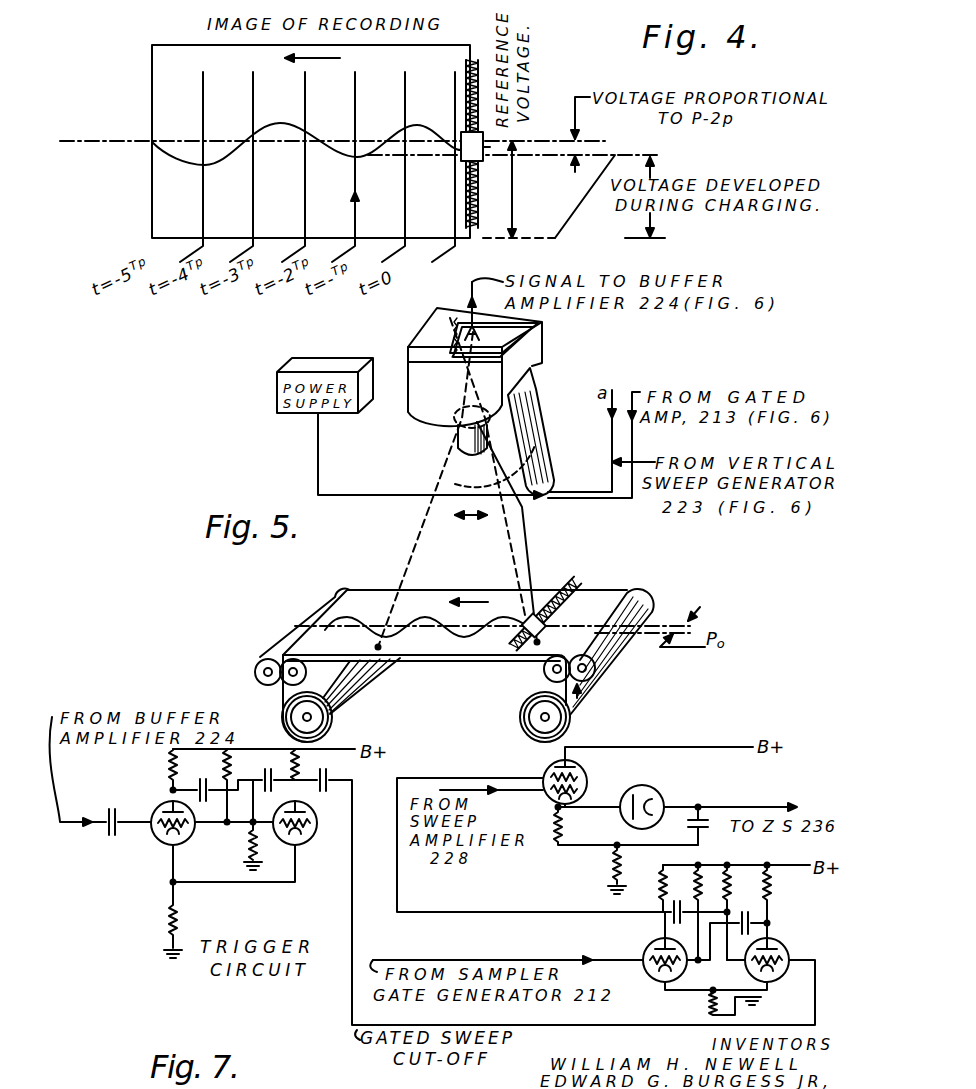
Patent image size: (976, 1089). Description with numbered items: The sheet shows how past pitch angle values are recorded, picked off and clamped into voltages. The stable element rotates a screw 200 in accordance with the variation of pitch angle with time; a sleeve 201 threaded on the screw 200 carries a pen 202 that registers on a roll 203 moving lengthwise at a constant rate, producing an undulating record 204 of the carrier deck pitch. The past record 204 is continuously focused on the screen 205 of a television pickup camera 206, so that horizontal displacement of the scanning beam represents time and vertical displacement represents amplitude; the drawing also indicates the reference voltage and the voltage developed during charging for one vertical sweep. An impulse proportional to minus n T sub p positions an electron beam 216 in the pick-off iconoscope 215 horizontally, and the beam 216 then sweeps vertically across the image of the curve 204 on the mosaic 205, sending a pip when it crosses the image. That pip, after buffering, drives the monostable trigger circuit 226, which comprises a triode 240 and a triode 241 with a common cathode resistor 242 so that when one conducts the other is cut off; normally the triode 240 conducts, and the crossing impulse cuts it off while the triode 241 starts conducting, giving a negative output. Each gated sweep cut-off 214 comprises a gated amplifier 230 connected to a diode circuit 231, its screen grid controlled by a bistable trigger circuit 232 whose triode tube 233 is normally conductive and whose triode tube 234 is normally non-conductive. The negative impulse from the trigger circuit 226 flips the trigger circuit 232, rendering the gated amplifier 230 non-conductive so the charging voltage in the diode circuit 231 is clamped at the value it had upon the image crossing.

In FIG. 4, the screw 200 is at (478, 64).
In FIG. 5, the screw 200 is at (576, 580).
In FIG. 4, the sleeve 201 is at (484, 158).
In FIG. 5, the sleeve 201 is at (537, 642).
In FIG. 4, the pen 202 is at (460, 148).
In FIG. 5, the pen 202 is at (550, 625).
In FIG. 4, the roll 203 is at (162, 211).
In FIG. 5, the roll 203 is at (605, 592).
In FIG. 4, the undulating record 204 is at (178, 158).
In FIG. 5, the undulating record 204 is at (478, 632).
In FIG. 5, the screen 205 is at (508, 335).
In FIG. 5, the television pickup camera 206 is at (530, 366).
In FIG. 5, the pick-off iconoscope 215 is at (553, 455).
In FIG. 5, the electron beam 216 is at (453, 482).
In FIG. 7, the trigger circuit 226 is at (150, 858).
In FIG. 7, the triode 240 is at (190, 843).
In FIG. 7, the triode 241 is at (302, 843).
In FIG. 7, the common cathode resistor 242 is at (165, 927).
In FIG. 7, the gated amplifier 230 is at (588, 770).
In FIG. 7, the diode circuit 231 is at (661, 797).
In FIG. 7, the gated sweep cut-off 214 is at (773, 916).
In FIG. 7, the triode tube 233 is at (648, 946).
In FIG. 7, the triode tube 234 is at (786, 947).
In FIG. 7, the bistable trigger circuit 232 is at (665, 992).